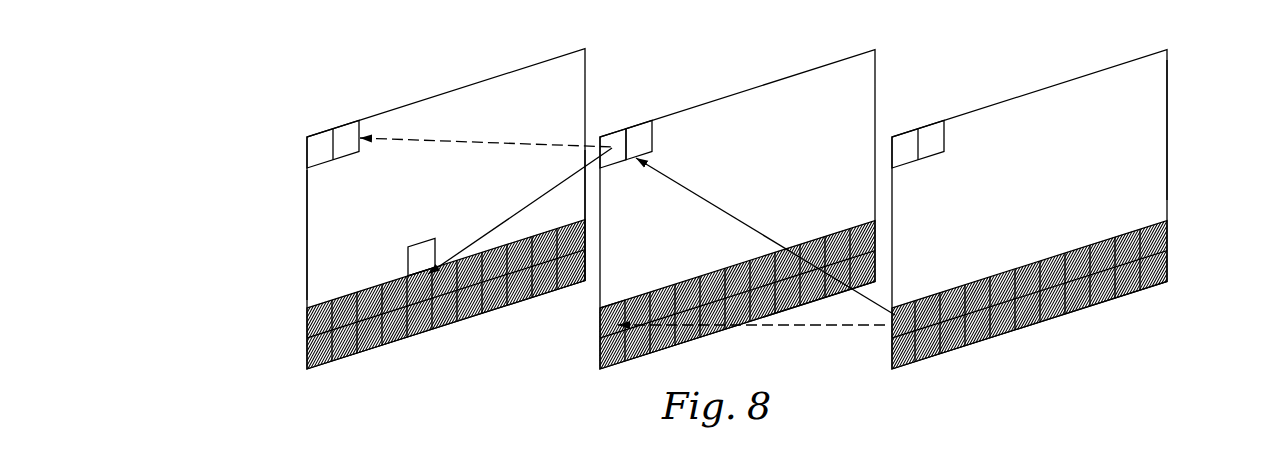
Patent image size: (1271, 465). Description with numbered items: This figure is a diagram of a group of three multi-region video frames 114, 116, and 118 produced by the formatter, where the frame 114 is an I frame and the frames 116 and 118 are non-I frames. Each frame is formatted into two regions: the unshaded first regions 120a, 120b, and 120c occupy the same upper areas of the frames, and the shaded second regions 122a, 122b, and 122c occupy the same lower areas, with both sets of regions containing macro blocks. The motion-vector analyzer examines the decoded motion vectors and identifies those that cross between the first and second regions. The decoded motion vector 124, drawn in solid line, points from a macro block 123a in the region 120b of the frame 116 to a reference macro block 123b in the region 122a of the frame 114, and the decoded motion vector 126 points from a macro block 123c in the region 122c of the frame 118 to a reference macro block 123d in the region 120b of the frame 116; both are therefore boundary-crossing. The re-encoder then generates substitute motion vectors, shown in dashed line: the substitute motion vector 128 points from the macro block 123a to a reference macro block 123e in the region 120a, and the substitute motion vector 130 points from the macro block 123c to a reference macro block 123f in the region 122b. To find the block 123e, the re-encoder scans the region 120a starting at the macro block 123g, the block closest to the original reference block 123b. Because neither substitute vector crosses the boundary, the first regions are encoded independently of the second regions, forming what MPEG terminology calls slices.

The video frame 114 is at (461, 88).
The video frame 116 is at (735, 92).
The video frame 118 is at (1017, 97).
The first region 120a is at (298, 218).
The first region 120b is at (594, 286).
The first region 120c is at (1174, 118).
The second region 122a is at (331, 376).
The second region 122b is at (661, 282).
The second region 122c is at (978, 281).
The macro block 123a is at (616, 138).
The reference macro block 123b is at (407, 279).
The macro block 123c is at (910, 306).
The reference macro block 123d is at (643, 138).
The reference macro block 123e is at (343, 136).
The reference macro block 123f is at (621, 306).
The macro block 123g is at (425, 254).
The decoded motion vector 124 is at (517, 212).
The decoded motion vector 126 is at (723, 210).
The substitute motion vector 128 is at (530, 141).
The substitute motion vector 130 is at (832, 330).